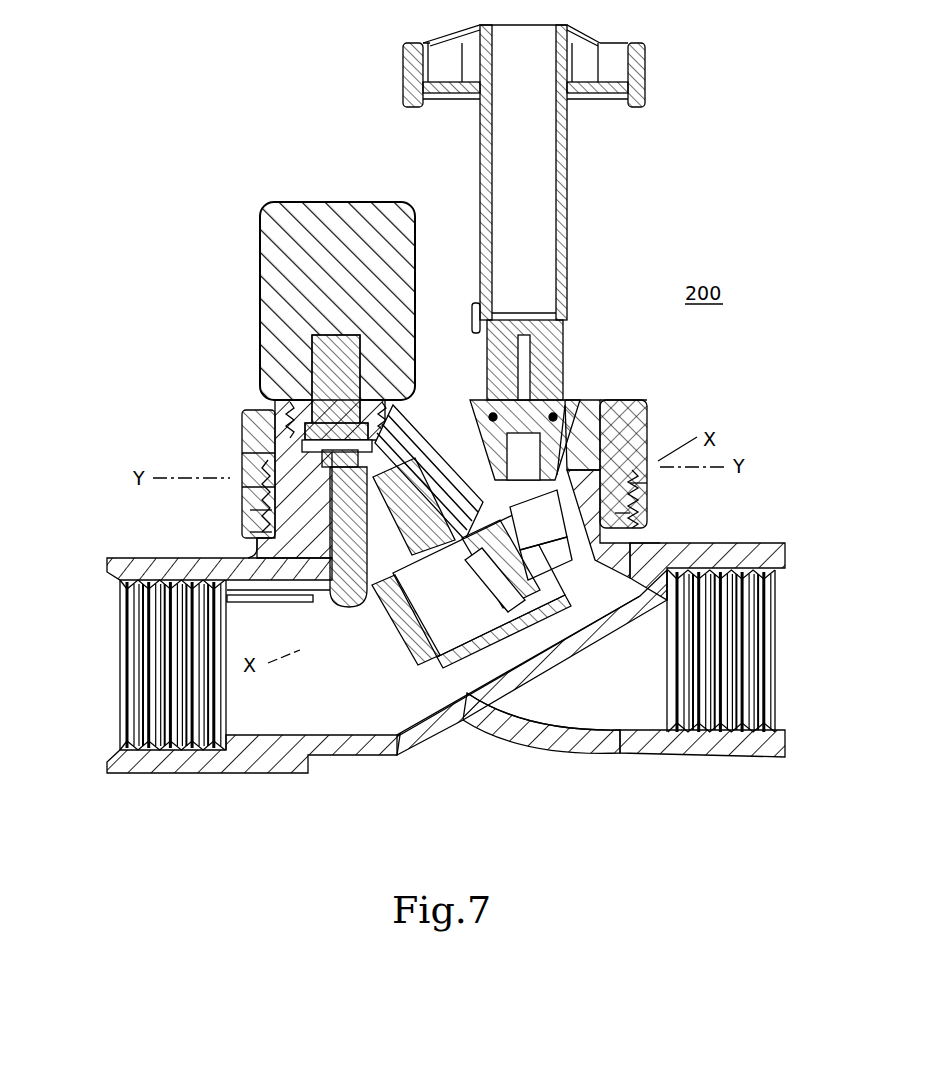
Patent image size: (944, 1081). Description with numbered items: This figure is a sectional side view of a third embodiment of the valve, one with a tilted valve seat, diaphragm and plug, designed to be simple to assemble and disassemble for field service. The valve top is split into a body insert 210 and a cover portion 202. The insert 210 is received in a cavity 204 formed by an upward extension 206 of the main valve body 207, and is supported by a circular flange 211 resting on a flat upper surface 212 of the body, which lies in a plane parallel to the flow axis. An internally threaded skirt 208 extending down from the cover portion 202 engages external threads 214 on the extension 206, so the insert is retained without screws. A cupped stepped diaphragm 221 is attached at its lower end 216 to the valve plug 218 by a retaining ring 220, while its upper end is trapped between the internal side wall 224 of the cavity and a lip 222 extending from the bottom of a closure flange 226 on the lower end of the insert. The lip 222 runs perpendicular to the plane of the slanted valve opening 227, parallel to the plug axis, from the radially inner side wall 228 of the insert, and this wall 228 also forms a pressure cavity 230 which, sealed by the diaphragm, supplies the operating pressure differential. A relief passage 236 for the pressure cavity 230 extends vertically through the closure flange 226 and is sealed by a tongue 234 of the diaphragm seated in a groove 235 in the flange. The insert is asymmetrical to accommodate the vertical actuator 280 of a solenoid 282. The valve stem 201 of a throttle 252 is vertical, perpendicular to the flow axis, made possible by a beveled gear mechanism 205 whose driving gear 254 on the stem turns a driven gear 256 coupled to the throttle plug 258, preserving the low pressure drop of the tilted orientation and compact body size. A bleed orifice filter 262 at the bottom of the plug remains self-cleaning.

The valve stem 201 is at (569, 215).
The cover portion 202 is at (236, 421).
The cavity 204 is at (253, 552).
The beveled gear mechanism 205 is at (644, 398).
The upward extension 206 is at (627, 513).
The main valve body 207 is at (482, 740).
The internally threaded skirt 208 is at (640, 483).
The insert portion 210 is at (247, 447).
The circular flange 211 is at (247, 453).
The flat upper surface 212 is at (247, 487).
The external threads 214 is at (640, 535).
The lower end 216 is at (470, 531).
The valve plug 218 is at (465, 660).
The retaining ring 220 is at (412, 637).
The cupped stepped diaphragm 221 is at (370, 624).
The lip 222 is at (650, 457).
The internal side wall 224 is at (313, 603).
The closure flange 226 is at (355, 523).
The slanted valve opening 227 is at (548, 650).
The radially inner side wall 228 is at (648, 420).
The pressure cavity 230 is at (252, 510).
The tongue 234 is at (103, 562).
The groove 235 is at (255, 532).
The relief passage 236 is at (292, 418).
The throttle 252 is at (463, 420).
The driving gear 254 is at (570, 430).
The driven gear 256 is at (372, 460).
The throttle plug 258 is at (445, 470).
The valve bleed orifice filter 262 is at (495, 631).
The actuator 280 is at (337, 378).
The solenoid 282 is at (257, 258).